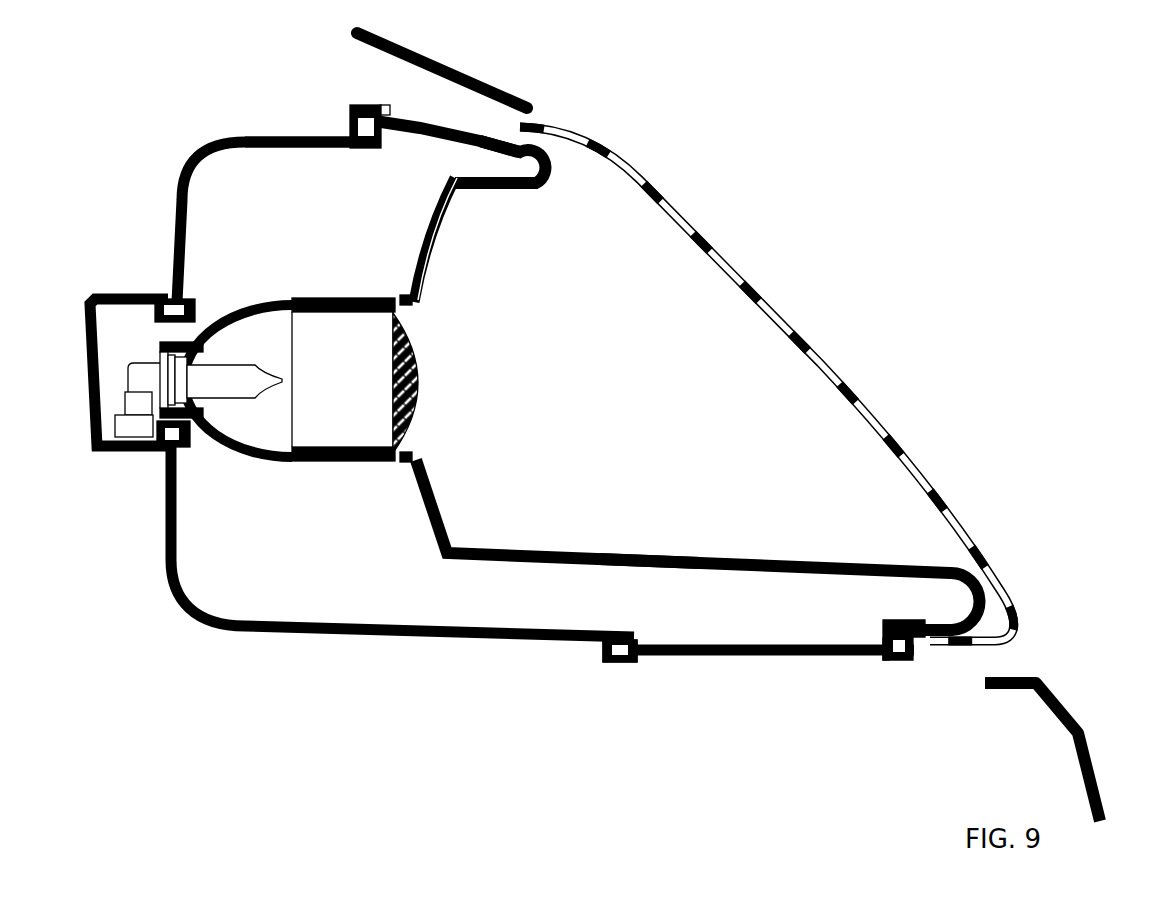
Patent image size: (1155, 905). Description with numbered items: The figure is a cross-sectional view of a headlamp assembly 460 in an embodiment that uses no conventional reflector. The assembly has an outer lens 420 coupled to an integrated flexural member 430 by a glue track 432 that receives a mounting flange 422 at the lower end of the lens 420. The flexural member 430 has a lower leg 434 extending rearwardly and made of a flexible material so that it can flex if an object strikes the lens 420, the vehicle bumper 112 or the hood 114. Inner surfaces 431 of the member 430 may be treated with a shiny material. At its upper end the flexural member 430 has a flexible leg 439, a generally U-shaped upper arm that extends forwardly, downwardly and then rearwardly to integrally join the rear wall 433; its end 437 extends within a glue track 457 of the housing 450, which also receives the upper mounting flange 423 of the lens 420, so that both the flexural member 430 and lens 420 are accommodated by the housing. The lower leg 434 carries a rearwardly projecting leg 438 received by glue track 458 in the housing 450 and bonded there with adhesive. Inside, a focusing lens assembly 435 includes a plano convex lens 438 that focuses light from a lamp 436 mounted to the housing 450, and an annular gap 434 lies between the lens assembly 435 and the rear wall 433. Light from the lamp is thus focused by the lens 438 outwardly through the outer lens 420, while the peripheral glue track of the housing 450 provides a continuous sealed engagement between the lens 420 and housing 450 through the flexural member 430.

The vehicle bumper 112 is at (1062, 703).
The hood 114 is at (453, 63).
The lens 420 is at (873, 382).
The mounting flange 422 is at (893, 680).
The upper mounting flange 423 is at (366, 103).
The integrated flexural member 430 is at (532, 528).
The inner surfaces 431 is at (547, 153).
The glue track 432 is at (895, 663).
The rear wall 433 is at (444, 263).
The lower leg 434 is at (413, 447).
The lens assembly 435 is at (333, 290).
The lamp 436 is at (233, 362).
The end 437 is at (352, 137).
The plano convex lens 438 is at (430, 372).
The flexible leg 439 is at (493, 138).
The housing 450 is at (169, 592).
The glue track 457 is at (379, 103).
The glue track 458 is at (627, 637).
The headlamp assembly 460 is at (842, 255).